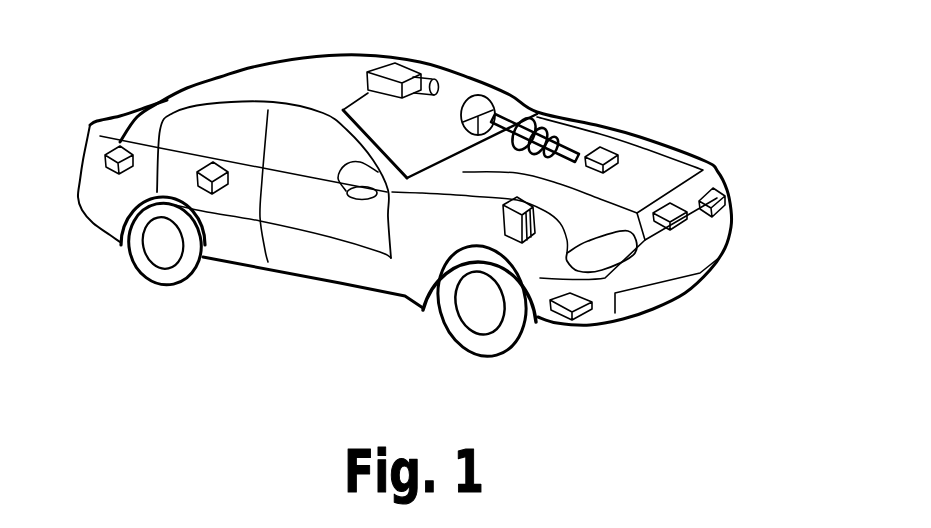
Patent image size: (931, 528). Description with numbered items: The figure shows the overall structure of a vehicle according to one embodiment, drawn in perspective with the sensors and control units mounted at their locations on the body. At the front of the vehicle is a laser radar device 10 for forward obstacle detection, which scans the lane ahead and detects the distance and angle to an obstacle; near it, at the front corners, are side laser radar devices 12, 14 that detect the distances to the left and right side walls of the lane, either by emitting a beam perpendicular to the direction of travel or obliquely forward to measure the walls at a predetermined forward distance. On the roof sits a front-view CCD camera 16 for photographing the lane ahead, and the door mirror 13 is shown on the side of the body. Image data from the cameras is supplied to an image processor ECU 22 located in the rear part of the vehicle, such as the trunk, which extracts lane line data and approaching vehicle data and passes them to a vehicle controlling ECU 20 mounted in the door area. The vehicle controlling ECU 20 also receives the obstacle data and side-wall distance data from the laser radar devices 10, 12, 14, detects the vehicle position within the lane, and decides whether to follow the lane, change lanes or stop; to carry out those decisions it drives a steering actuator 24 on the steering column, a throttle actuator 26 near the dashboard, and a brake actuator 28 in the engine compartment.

The laser radar device 10 is at (701, 220).
The side laser radar device 12 is at (582, 316).
The side mirror 13 is at (353, 199).
The side laser radar device 14 is at (725, 194).
The front-view CCD camera 16 is at (421, 79).
The vehicle controlling ECU 20 is at (209, 194).
The image processor ECU 22 is at (113, 174).
The steering actuator 24 is at (528, 121).
The throttle actuator 26 is at (611, 150).
The brake actuator 28 is at (500, 240).